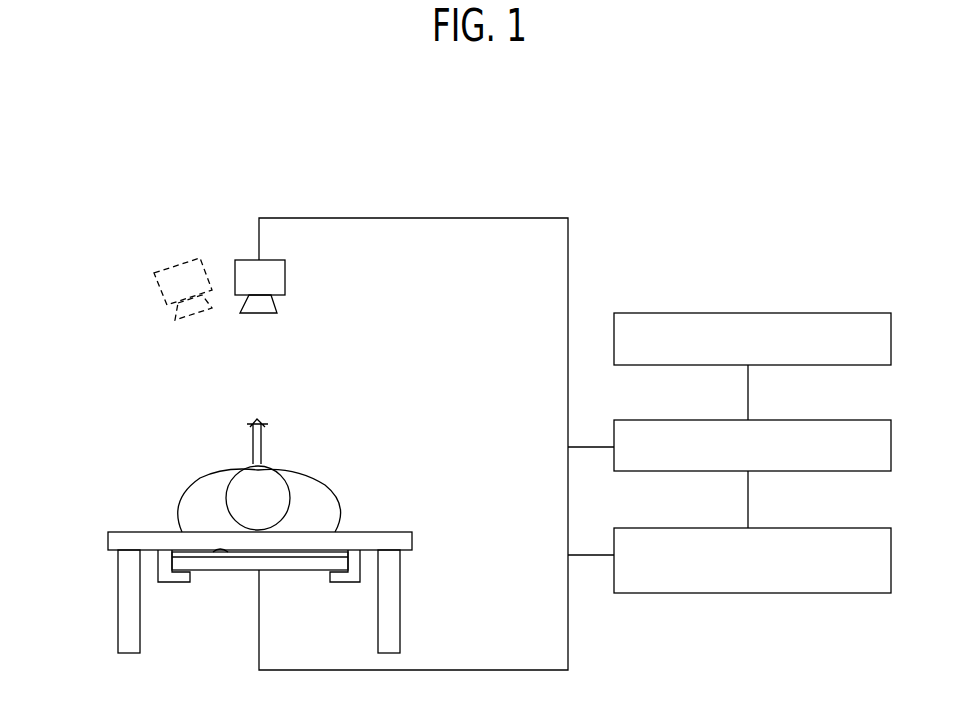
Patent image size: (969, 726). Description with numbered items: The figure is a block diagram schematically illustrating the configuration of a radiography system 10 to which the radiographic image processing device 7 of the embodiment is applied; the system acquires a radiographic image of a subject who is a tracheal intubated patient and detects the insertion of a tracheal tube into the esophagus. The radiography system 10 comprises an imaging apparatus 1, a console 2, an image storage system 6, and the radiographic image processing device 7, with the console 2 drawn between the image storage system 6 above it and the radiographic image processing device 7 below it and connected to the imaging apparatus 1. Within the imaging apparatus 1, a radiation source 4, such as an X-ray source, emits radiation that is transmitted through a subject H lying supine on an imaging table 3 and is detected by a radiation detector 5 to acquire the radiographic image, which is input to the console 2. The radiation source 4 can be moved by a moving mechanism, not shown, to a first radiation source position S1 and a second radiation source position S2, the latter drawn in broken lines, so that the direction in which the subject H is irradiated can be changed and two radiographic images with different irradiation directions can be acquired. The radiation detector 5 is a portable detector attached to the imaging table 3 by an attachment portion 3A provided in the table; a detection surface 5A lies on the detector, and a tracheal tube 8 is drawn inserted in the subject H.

The imaging apparatus 1 is at (190, 209).
The radiography system 10 is at (394, 179).
The radiation source 4 is at (285, 271).
The first radiation source position S1 is at (293, 307).
The second radiation source position S2 is at (138, 293).
The subject H is at (327, 483).
The tube / marker 8 is at (262, 440).
The imaging table 3 is at (400, 600).
The attachment portion 3A is at (172, 582).
The radiation detector 5 is at (285, 572).
The detection surface of radiation detector 5A is at (233, 552).
The image storage system 6 is at (862, 312).
The console 2 is at (862, 420).
The radiographic image processing device 7 is at (862, 528).